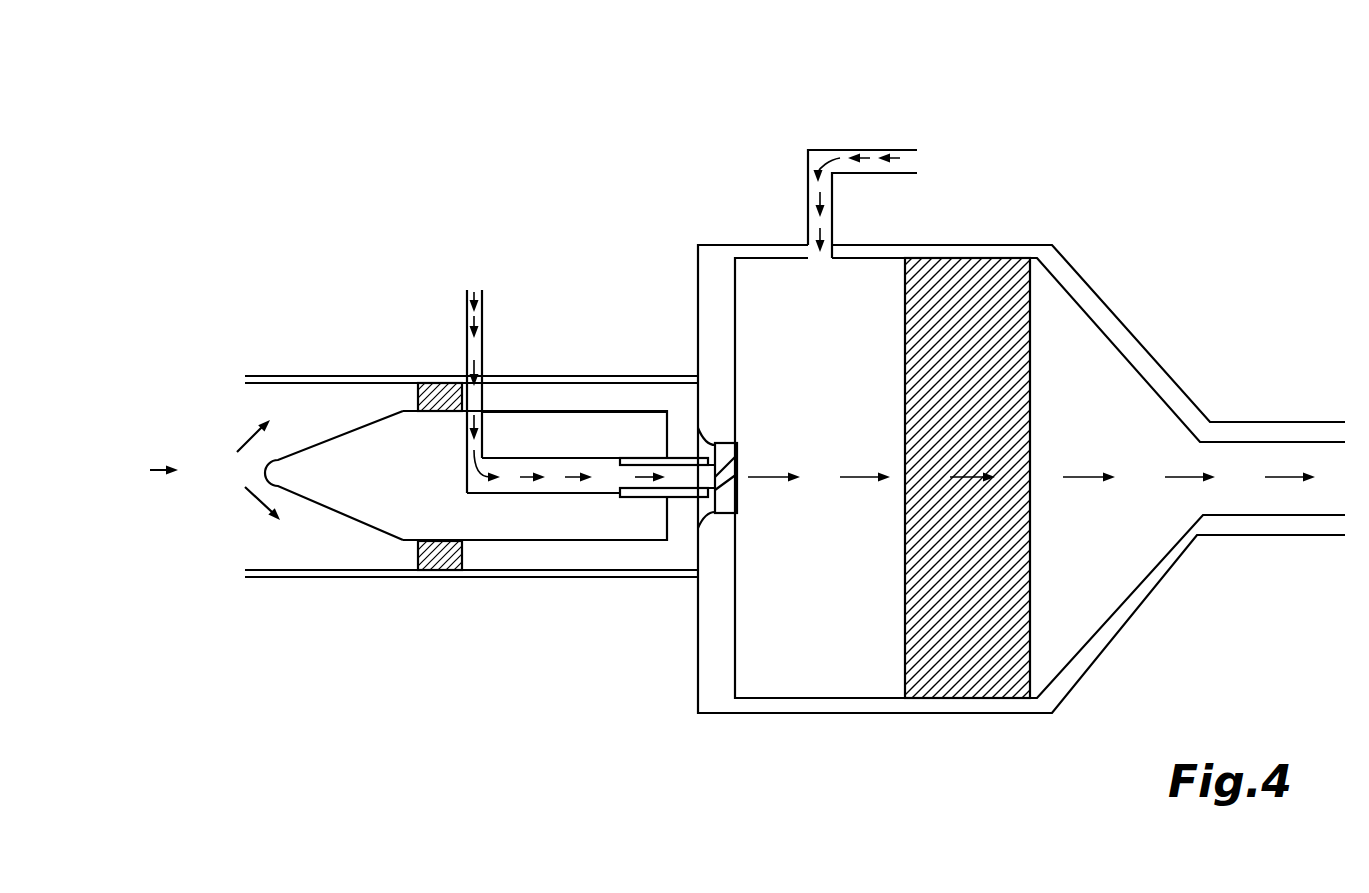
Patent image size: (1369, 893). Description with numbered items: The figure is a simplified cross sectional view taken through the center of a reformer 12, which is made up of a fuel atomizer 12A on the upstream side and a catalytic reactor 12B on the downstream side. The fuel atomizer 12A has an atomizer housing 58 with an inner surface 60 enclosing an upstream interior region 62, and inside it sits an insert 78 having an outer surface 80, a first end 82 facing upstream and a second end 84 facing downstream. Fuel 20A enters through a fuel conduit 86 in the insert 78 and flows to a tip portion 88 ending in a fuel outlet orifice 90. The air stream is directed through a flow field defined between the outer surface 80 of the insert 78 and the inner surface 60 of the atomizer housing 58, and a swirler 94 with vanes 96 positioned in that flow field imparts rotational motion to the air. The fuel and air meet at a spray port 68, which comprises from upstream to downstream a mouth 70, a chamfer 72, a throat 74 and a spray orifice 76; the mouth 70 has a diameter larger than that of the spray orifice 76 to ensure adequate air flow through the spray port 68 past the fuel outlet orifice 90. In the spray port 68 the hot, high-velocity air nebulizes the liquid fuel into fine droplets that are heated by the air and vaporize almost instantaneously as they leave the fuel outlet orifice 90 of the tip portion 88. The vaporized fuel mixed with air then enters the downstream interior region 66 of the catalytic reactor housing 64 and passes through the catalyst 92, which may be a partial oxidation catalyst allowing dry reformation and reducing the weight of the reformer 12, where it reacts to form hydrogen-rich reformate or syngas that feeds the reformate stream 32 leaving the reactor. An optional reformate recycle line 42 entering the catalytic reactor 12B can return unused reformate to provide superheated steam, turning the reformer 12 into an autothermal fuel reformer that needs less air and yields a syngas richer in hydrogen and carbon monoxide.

The reformer 12 is at (627, 243).
The fuel atomizer 12A is at (440, 625).
The catalytic reactor 12B is at (995, 738).
The fuel 20A is at (475, 290).
The reformate stream 32 is at (1361, 493).
The reformate recycle line 42 is at (912, 173).
The atomizer housing 58 is at (603, 570).
The inner surface 60 is at (603, 572).
The upstream interior region 62 is at (336, 557).
The catalytic reactor housing 64 is at (812, 700).
The downstream interior region 66 is at (827, 608).
The spray port 68 is at (746, 422).
The mouth 70 is at (705, 513).
The chamfer 72 is at (737, 448).
The throat 74 is at (737, 492).
The spray orifice 76 is at (737, 513).
The insert 78 is at (421, 486).
The outer surface 80 is at (563, 540).
The first end 82 is at (278, 457).
The second end 84 is at (650, 420).
The fuel conduit 86 is at (485, 497).
The tip portion 88 is at (668, 498).
The fuel outlet orifice 90 is at (737, 468).
The catalyst 92 is at (1032, 373).
The swirler 94 is at (460, 560).
The vanes 96 is at (440, 385).